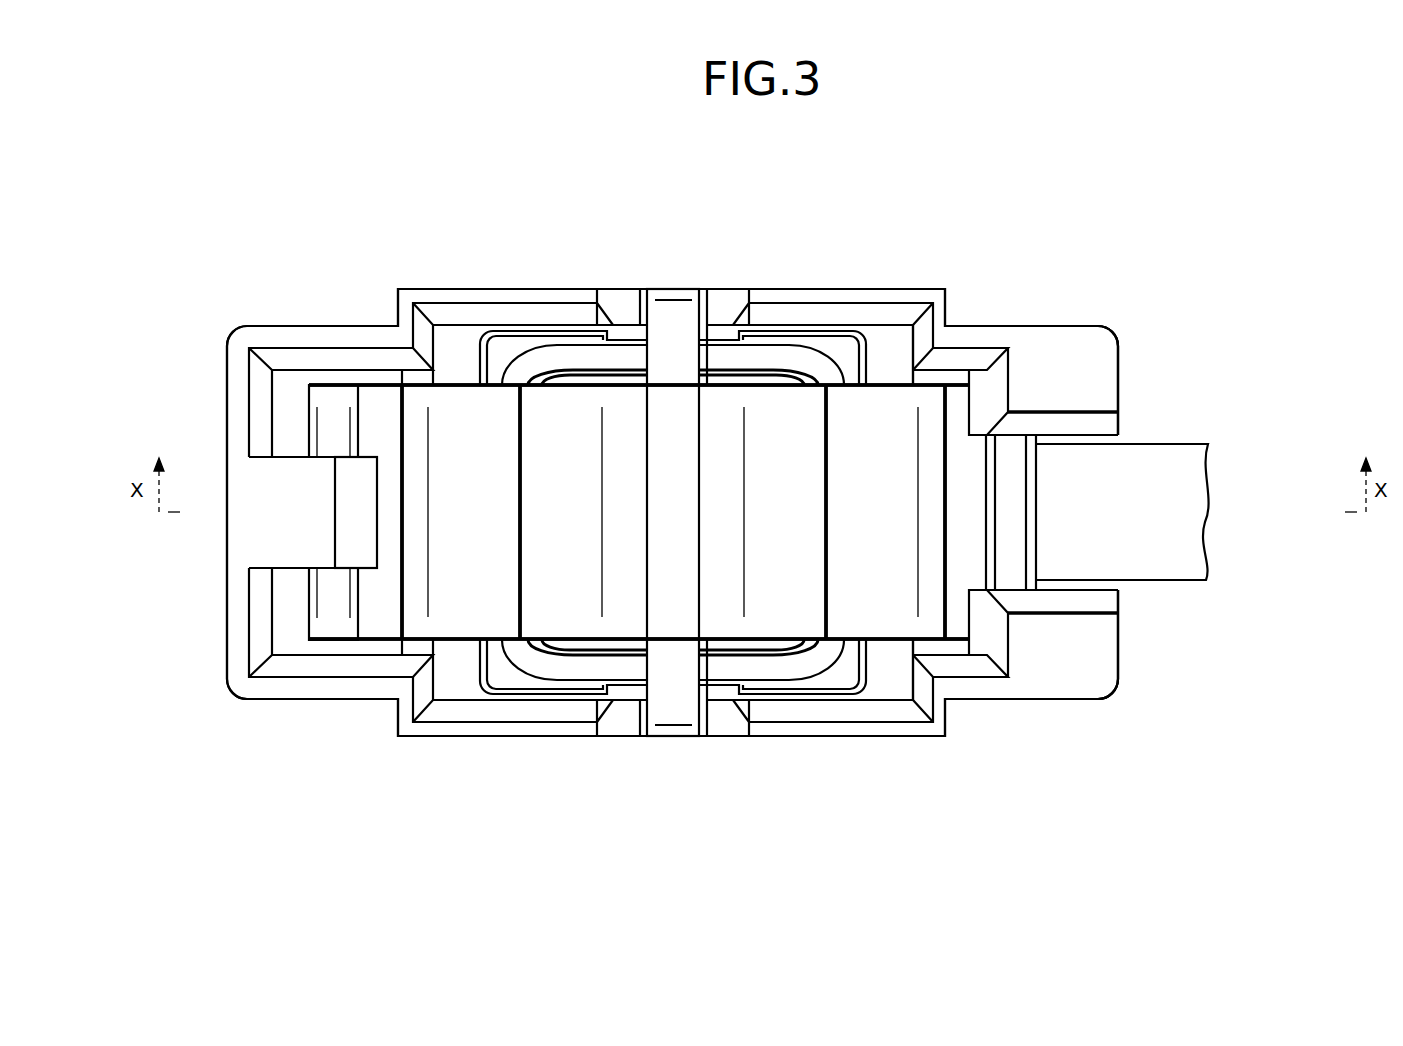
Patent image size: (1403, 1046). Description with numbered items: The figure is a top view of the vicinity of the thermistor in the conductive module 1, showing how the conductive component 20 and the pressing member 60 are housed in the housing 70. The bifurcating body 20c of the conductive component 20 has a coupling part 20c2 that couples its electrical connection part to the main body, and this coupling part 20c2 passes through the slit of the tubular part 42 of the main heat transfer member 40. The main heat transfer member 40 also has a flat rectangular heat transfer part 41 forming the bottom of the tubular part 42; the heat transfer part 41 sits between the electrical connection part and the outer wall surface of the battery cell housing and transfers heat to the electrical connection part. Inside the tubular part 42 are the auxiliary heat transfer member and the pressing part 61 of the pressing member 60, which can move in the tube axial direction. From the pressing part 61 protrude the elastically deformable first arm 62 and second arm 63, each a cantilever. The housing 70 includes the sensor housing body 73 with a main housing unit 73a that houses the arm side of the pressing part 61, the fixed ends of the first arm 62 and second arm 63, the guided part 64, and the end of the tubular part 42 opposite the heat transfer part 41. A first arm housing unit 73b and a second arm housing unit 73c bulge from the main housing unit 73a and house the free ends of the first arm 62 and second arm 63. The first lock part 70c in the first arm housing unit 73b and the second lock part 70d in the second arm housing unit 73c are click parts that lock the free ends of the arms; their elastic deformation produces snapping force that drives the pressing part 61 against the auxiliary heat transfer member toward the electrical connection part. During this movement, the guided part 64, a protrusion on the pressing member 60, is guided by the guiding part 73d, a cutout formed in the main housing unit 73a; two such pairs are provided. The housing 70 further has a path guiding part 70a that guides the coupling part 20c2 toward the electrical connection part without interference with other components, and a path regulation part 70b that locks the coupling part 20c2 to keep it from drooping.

The conductive module 1 is at (1268, 488).
The conductive component 20 is at (1147, 580).
The bifurcating body 20c is at (1147, 580).
The coupling part 20c2 is at (1162, 582).
The main heat transfer member 40 is at (673, 424).
The heat transfer part 41 is at (555, 362).
The tubular part 42 is at (620, 355).
The pressing member 60 is at (453, 370).
The pressing part 61 is at (722, 380).
The first arm 62 is at (309, 403).
The second arm 63 is at (1037, 473).
The guided part 64 is at (678, 298).
The housing 70 is at (785, 279).
The path guiding part 70a is at (920, 377).
The path regulation part 70b is at (910, 645).
The first lock part 70c is at (377, 478).
The second lock part 70d is at (968, 403).
The sensor housing body 73 is at (672, 451).
The main housing unit 73a is at (828, 302).
The first arm housing unit 73b is at (227, 403).
The second arm housing unit 73c is at (1118, 380).
The guiding part 73d is at (643, 292).